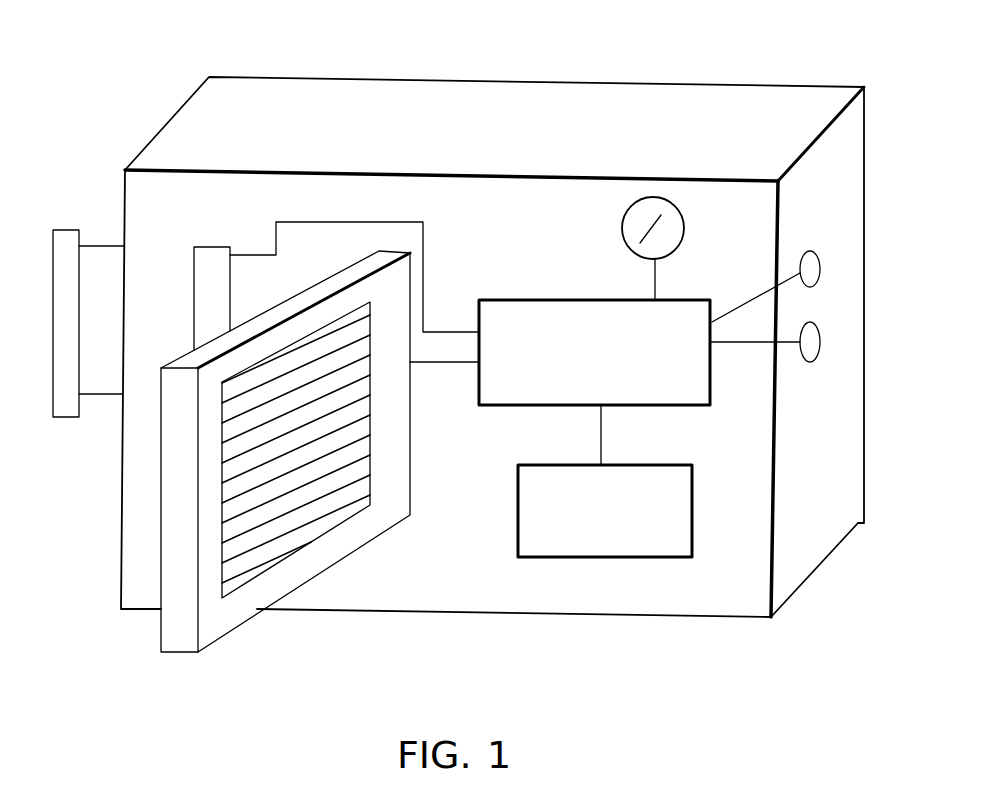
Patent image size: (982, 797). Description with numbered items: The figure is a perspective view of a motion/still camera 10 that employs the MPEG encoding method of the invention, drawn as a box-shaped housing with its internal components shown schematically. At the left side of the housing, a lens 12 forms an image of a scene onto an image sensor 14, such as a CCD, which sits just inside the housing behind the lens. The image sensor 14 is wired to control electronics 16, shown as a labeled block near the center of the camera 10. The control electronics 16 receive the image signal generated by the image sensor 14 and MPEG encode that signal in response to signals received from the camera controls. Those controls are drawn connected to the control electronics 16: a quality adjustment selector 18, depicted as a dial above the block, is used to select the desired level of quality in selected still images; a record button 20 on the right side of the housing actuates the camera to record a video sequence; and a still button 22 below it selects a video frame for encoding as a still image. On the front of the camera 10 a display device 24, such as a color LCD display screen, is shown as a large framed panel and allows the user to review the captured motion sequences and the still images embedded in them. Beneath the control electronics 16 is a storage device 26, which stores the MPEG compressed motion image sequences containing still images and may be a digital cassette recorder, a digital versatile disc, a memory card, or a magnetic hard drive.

The motion/still camera 10 is at (341, 77).
The lens 12 is at (72, 230).
The image sensor 14 is at (225, 247).
The control electronics 16 is at (562, 300).
The quality adjustment selector 18 is at (657, 197).
The record button 20 is at (822, 262).
The still button 22 is at (820, 343).
The display device 24 is at (255, 577).
The storage device 26 is at (692, 520).